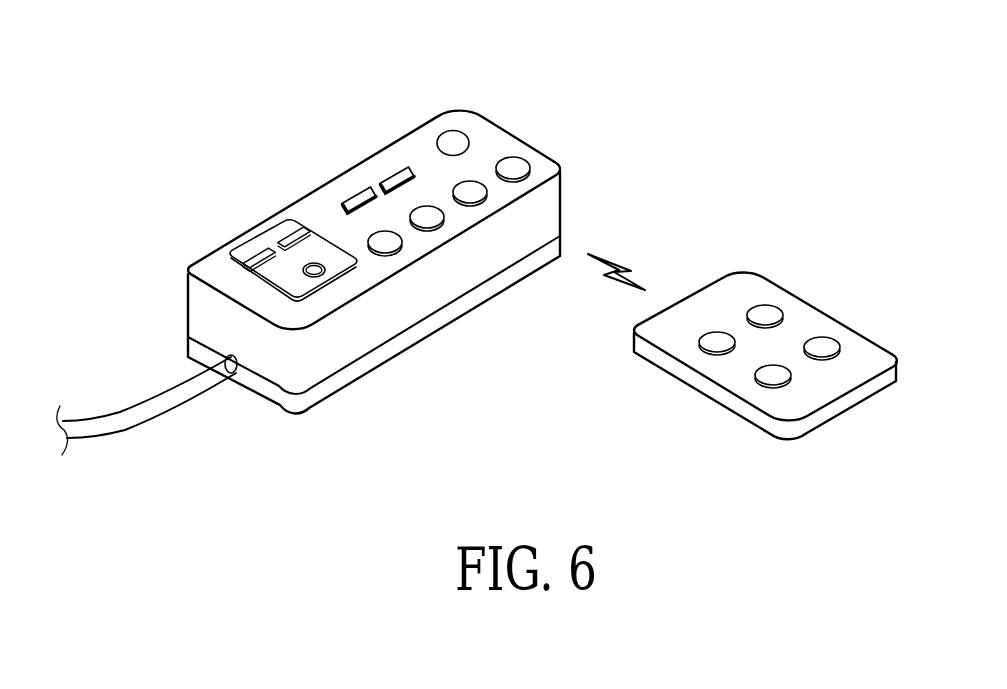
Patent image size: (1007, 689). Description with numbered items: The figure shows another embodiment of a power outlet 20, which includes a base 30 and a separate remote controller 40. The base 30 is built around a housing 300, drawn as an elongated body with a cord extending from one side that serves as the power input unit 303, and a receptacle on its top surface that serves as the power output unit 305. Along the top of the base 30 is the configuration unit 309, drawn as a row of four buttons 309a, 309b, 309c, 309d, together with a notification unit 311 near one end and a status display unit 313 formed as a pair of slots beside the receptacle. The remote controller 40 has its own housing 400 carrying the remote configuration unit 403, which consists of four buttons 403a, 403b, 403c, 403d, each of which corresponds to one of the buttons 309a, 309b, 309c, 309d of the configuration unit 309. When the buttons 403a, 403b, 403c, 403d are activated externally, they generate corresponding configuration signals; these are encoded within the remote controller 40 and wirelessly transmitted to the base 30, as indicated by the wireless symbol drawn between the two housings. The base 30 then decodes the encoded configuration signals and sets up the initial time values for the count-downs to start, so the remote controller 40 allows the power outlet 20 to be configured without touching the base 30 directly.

The power outlet 20 is at (708, 200).
The base 30 is at (577, 205).
The remote controller 40 is at (706, 268).
The housing 300 is at (320, 352).
The power input unit 303 is at (127, 420).
The power output unit 305 is at (267, 248).
The configuration unit 309 is at (571, 318).
The button 309a is at (389, 250).
The button 309b is at (431, 225).
The button 309c is at (474, 200).
The button 309d is at (517, 176).
The notification unit 311 is at (453, 140).
The status display unit 313 is at (354, 200).
The housing 400 is at (677, 338).
The remote configuration unit 403 is at (911, 284).
The button 403a is at (718, 338).
The button 403b is at (766, 313).
The button 403c is at (775, 372).
The button 403d is at (823, 345).